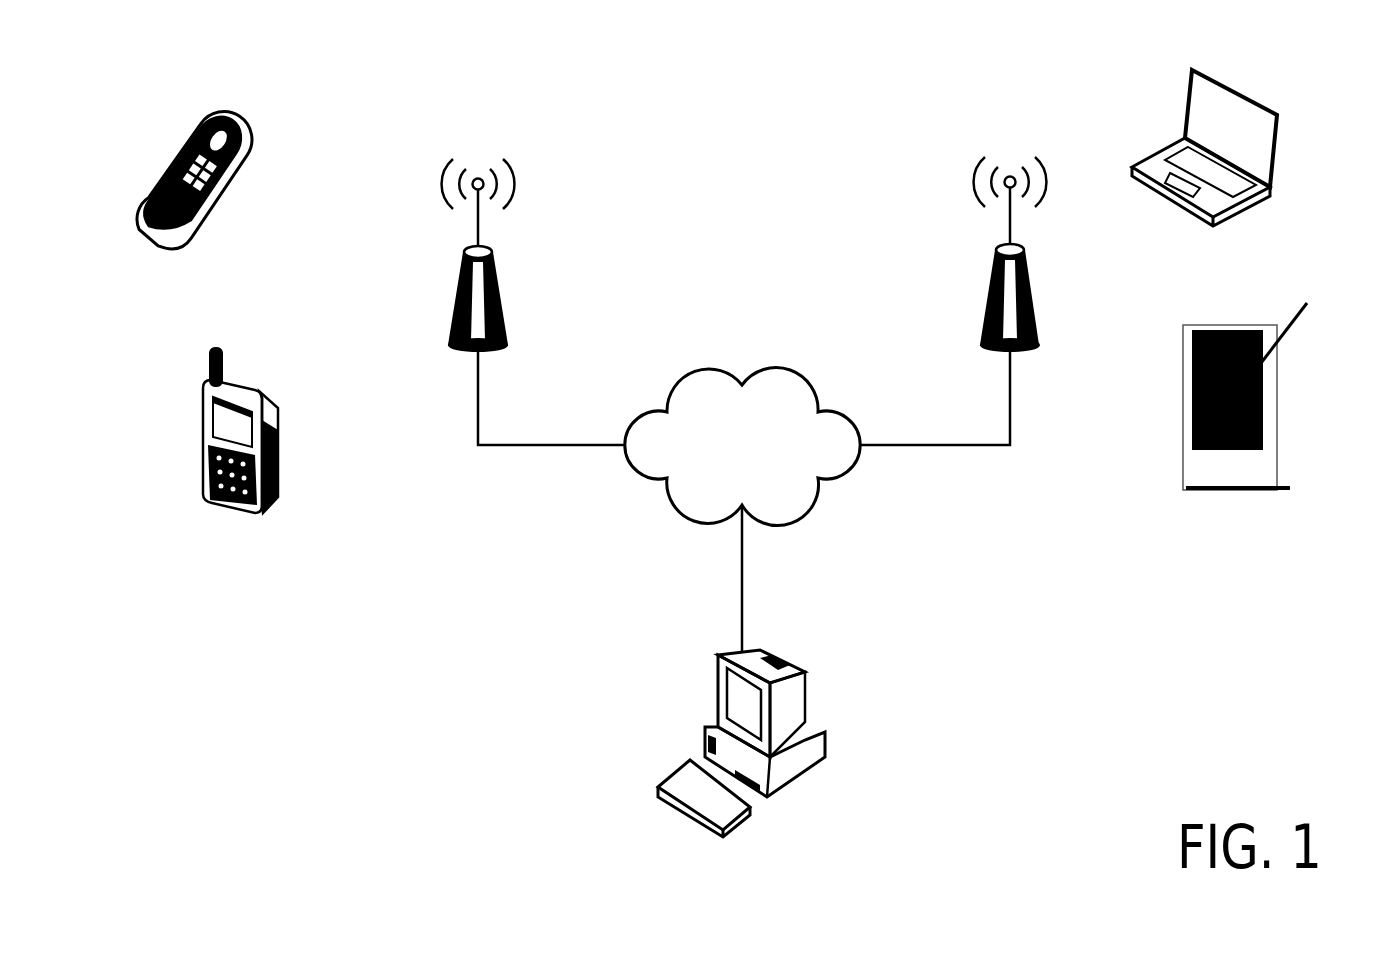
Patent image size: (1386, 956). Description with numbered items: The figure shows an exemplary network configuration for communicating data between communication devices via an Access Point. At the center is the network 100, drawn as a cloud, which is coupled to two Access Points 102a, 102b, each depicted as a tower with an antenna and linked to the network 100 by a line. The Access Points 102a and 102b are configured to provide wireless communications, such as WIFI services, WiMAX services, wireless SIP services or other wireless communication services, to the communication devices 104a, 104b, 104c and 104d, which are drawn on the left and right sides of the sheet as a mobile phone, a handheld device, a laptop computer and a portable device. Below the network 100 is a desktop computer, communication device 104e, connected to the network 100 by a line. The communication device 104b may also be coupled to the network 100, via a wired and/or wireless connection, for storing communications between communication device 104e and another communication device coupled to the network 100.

The network 100 is at (742, 447).
The Access Point 102a is at (505, 305).
The Access Point 102b is at (985, 305).
The communication device 104a is at (273, 122).
The communication device 104b is at (252, 385).
The communication device 104c is at (1277, 115).
The communication device 104d is at (1280, 372).
The communication device 104e is at (825, 730).